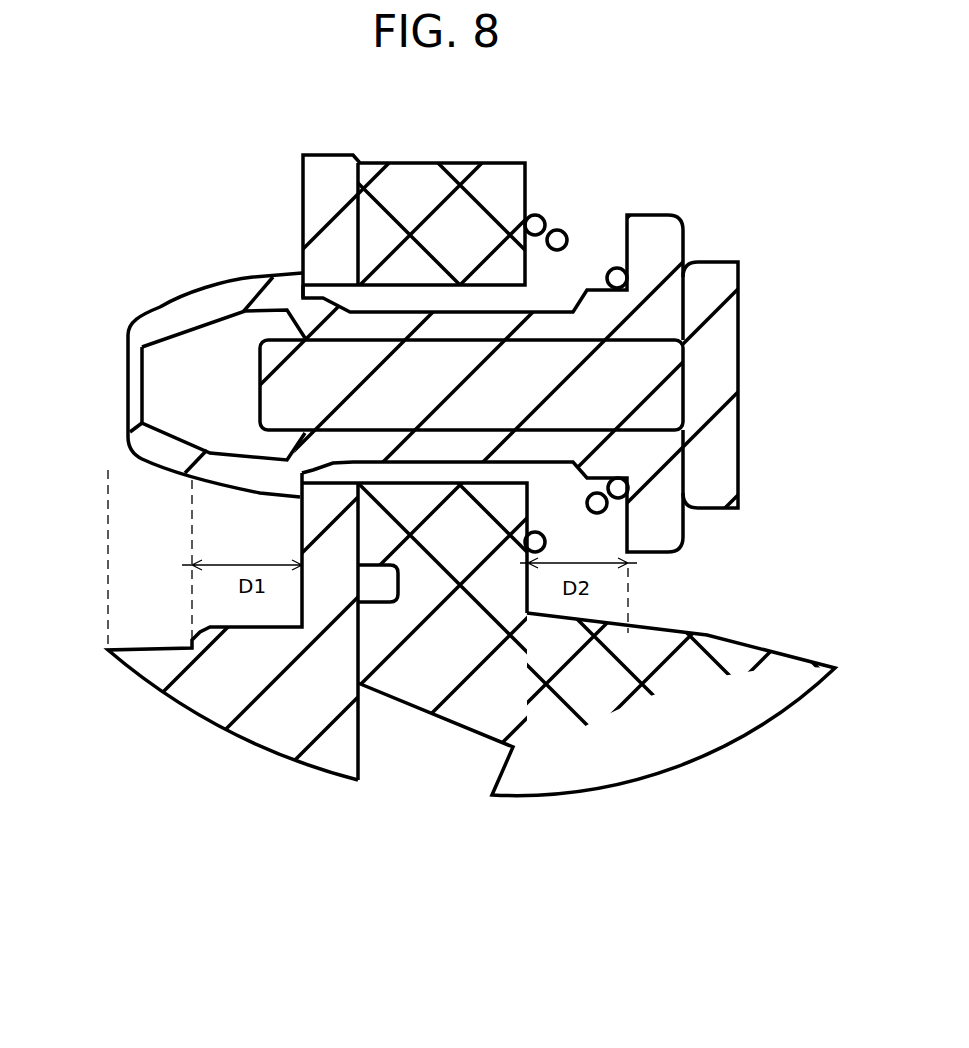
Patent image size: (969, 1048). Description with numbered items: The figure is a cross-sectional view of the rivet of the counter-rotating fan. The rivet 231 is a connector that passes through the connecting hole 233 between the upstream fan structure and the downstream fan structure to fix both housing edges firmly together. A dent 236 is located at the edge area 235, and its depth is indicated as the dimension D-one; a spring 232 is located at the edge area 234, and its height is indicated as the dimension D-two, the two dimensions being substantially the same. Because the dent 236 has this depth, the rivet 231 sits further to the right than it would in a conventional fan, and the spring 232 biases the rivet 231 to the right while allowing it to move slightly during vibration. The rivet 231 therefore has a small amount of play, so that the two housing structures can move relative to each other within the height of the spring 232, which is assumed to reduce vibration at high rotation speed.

The rivet 231 is at (200, 307).
The spring 232 is at (545, 213).
The connecting hole 233 is at (560, 288).
The edge area 234 is at (632, 723).
The edge area 235 is at (302, 708).
The dent 236 is at (323, 518).